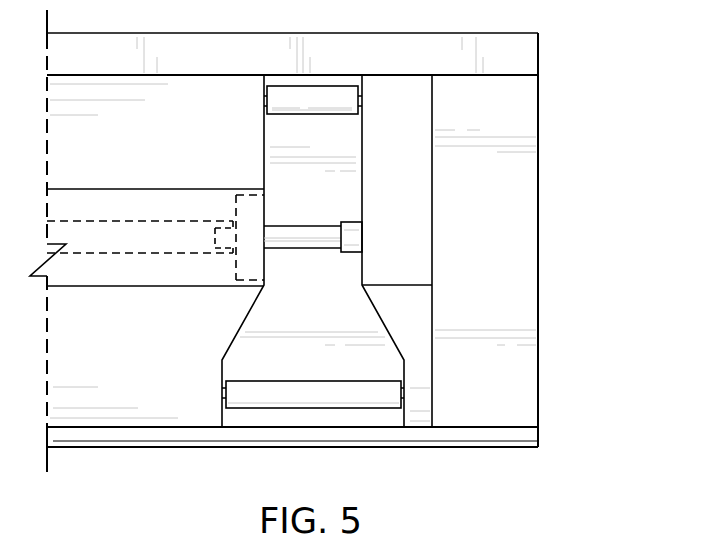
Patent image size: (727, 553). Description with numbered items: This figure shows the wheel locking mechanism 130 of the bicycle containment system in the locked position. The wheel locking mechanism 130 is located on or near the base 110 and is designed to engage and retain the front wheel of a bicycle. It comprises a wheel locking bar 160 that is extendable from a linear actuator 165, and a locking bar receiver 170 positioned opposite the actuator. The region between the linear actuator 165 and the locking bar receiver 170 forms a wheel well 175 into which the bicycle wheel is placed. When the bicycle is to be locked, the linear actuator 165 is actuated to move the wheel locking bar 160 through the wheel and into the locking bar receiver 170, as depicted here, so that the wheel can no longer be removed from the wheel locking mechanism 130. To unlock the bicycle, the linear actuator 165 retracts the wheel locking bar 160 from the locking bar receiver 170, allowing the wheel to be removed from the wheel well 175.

The wheel locking mechanism 130 is at (356, 236).
The base 110 is at (527, 226).
The wheel well 175 is at (350, 148).
The wheel locking bar 160 is at (308, 233).
The locking bar receiver 170 is at (355, 238).
The linear actuator 165 is at (117, 196).